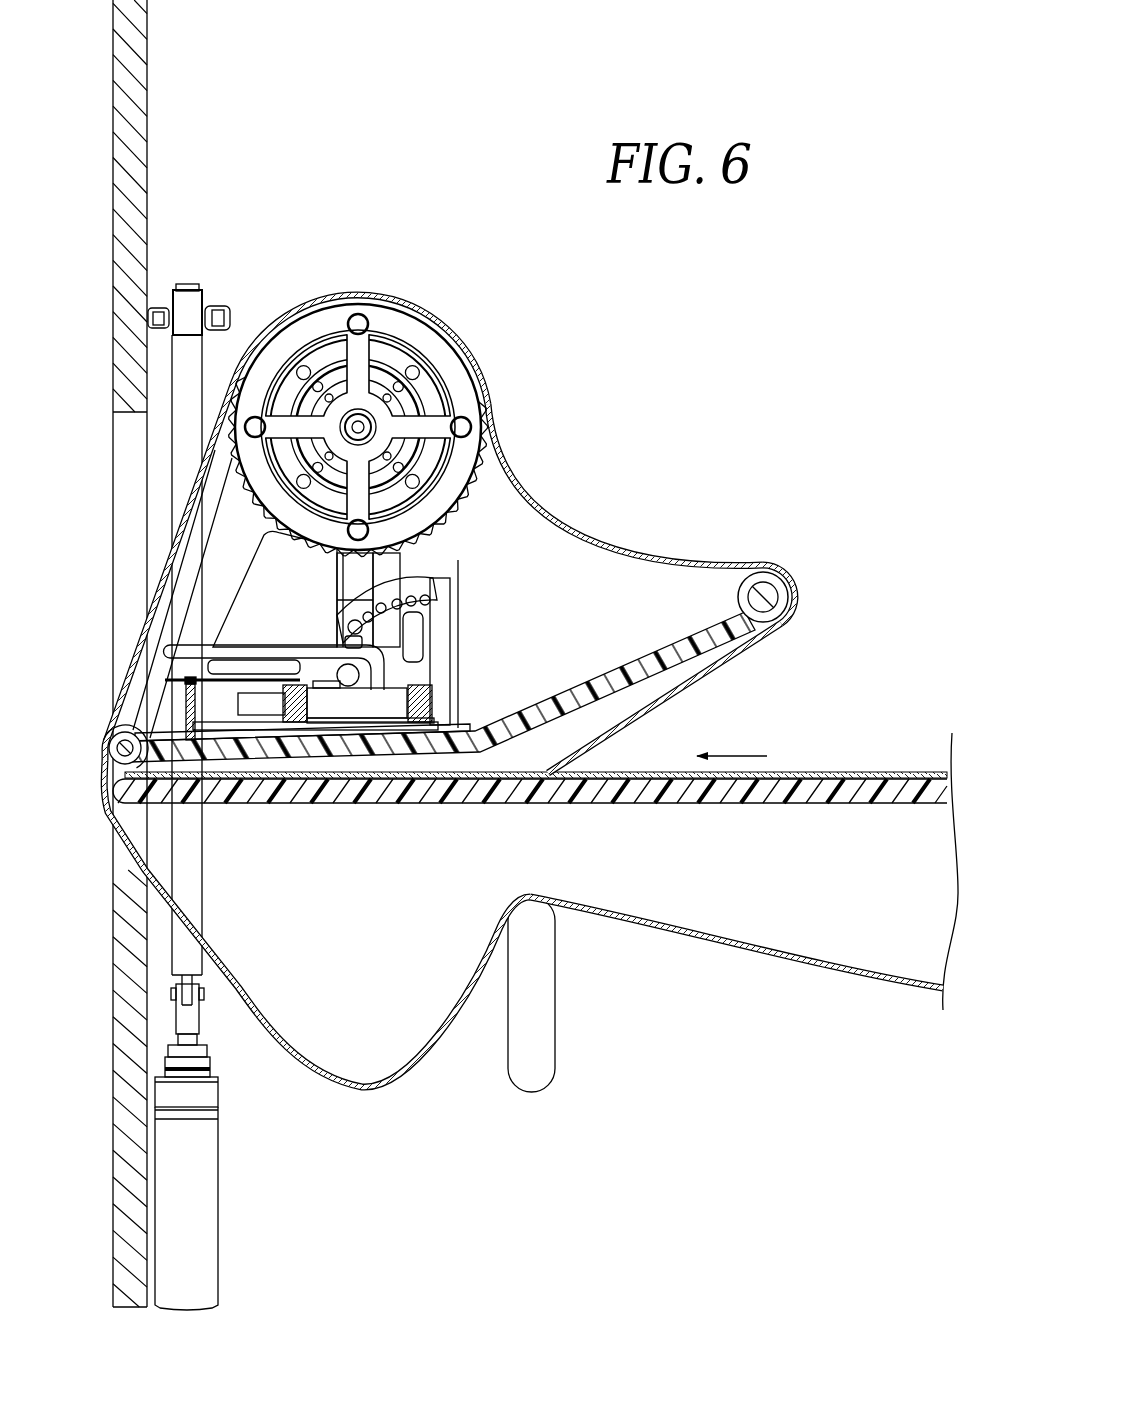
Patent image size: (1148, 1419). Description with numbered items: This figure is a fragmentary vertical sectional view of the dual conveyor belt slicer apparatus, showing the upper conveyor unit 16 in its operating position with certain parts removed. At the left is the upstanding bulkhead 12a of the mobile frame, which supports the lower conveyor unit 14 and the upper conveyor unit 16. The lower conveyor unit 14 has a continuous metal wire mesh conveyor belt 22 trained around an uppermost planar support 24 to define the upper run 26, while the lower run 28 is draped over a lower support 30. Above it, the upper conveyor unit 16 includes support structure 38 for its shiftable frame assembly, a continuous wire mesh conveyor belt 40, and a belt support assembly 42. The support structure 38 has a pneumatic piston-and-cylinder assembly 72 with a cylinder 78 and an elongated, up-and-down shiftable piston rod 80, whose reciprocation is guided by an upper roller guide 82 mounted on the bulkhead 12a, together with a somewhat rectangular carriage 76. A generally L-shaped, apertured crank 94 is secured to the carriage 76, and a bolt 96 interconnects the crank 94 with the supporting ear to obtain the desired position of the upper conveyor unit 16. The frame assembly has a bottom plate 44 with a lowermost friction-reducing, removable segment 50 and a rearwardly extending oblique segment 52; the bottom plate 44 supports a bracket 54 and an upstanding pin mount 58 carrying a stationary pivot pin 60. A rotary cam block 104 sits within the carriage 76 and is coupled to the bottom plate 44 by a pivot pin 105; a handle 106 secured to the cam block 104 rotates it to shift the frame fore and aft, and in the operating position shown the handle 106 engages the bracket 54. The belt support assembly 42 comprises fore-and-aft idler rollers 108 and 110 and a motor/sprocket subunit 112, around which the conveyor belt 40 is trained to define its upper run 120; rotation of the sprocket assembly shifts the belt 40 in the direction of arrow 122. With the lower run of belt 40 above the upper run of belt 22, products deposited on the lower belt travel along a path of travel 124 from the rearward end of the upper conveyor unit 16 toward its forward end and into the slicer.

The upstanding bulkhead 12a is at (135, 118).
The lower conveyor unit 14 is at (903, 1050).
The upper conveyor unit 16 is at (434, 246).
The conveyor belt 22 is at (810, 775).
The uppermost planar support 24 is at (747, 795).
The upper run 26 is at (884, 770).
The lower run 28 is at (847, 985).
The lower support 30 is at (538, 998).
The support structure 38 is at (163, 446).
The conveyor belt 40 is at (659, 540).
The belt support assembly 42 is at (492, 498).
The bottom plate 44 is at (147, 723).
The friction-reducing segment 50 is at (262, 755).
The oblique segment 52 is at (663, 663).
The bracket 54 is at (185, 700).
The pin mount 58 is at (412, 697).
The pivot pin 60 is at (237, 700).
The pneumatic piston-and-cylinder assembly 72 is at (238, 1238).
The carriage 76 is at (410, 671).
The cylinder 78 is at (216, 1180).
The piston rod 80 is at (187, 362).
The upper roller guide 82 is at (185, 290).
The crank 94 is at (426, 628).
The bolt 96 is at (345, 641).
The rotary cam block 104 is at (378, 707).
The pivot pin 105 is at (333, 738).
The handle 106 is at (177, 655).
The idler roller 108 is at (110, 756).
The idler roller 110 is at (777, 582).
The motor/sprocket subunit 112 is at (464, 333).
The upper run 120 is at (527, 454).
The arrow 122 is at (740, 690).
The path of travel 124 is at (753, 753).